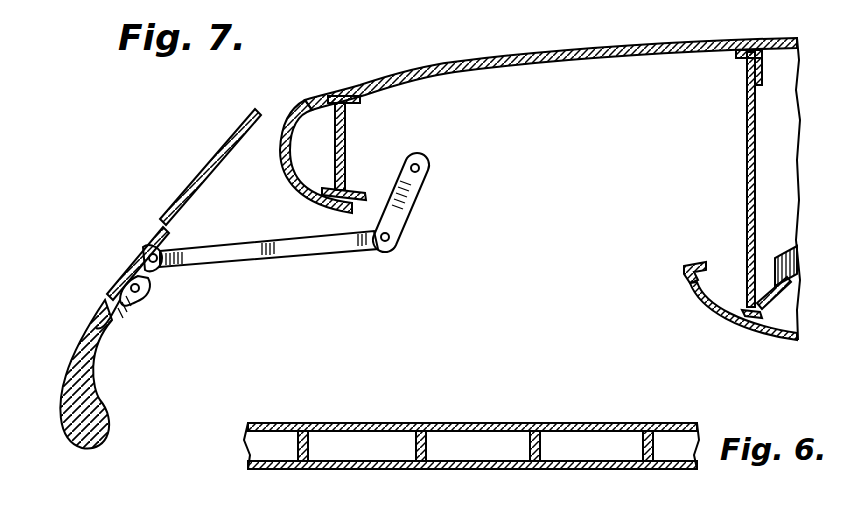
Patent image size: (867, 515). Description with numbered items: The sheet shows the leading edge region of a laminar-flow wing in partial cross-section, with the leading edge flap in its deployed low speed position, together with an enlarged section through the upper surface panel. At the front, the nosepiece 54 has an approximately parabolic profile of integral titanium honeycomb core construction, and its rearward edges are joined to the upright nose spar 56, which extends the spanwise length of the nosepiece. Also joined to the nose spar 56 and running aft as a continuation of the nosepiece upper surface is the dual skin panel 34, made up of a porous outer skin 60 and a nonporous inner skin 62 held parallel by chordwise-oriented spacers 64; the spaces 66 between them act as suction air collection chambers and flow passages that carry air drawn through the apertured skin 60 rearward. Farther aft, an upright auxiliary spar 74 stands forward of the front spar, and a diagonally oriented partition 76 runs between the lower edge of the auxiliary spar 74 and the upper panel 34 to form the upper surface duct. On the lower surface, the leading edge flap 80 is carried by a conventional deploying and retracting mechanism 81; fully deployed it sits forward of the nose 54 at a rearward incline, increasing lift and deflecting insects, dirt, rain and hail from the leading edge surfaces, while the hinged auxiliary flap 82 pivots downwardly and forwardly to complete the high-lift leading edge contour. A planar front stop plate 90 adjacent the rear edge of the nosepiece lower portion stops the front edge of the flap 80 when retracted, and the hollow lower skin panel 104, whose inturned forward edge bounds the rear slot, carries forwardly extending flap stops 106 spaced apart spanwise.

In FIG. 7, the dual skin panel 34 is at (587, 44).
In FIG. 6, the dual skin panel 34 is at (330, 421).
In FIG. 7, the nosepiece 54 is at (286, 111).
In FIG. 7, the nose spar 56 is at (345, 138).
In FIG. 6, the porous outer skin 60 is at (488, 422).
In FIG. 6, the nonporous inner skin 62 is at (488, 470).
In FIG. 6, the spacers 64 is at (420, 462).
In FIG. 6, the spaces 66 is at (377, 442).
In FIG. 7, the auxiliary spar 74 is at (747, 119).
In FIG. 7, the partition 76 is at (792, 264).
In FIG. 7, the leading edge flap 80 is at (193, 178).
In FIG. 7, the mechanism 81 is at (315, 255).
In FIG. 7, the auxiliary flap 82 is at (108, 413).
In FIG. 7, the front stop plate 90 is at (358, 196).
In FIG. 7, the skin panel 104 is at (765, 328).
In FIG. 7, the flap stops 106 is at (690, 266).